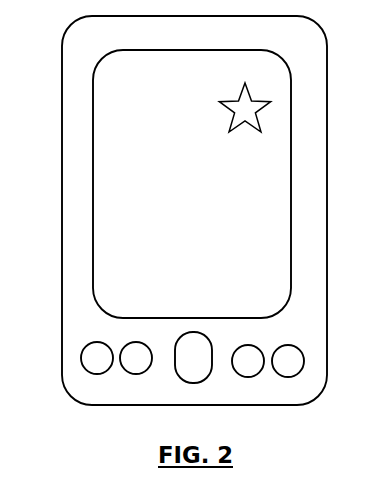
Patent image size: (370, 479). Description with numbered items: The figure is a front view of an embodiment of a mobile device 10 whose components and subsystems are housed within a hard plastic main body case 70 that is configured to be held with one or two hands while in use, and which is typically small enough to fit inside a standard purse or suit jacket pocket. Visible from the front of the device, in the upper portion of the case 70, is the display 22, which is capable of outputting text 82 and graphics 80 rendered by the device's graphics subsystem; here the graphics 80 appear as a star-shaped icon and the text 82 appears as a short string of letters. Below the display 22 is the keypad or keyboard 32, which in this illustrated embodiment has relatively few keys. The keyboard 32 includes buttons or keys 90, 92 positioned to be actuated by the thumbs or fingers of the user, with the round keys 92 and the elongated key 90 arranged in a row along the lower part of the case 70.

The mobile device 10 is at (62, 95).
The display 22 is at (108, 143).
The main body case 70 is at (327, 85).
The graphics 80 is at (230, 114).
The text 82 is at (186, 172).
The keypad or keyboard 32 is at (113, 387).
The keys 92 is at (137, 343).
The key 90 is at (194, 384).